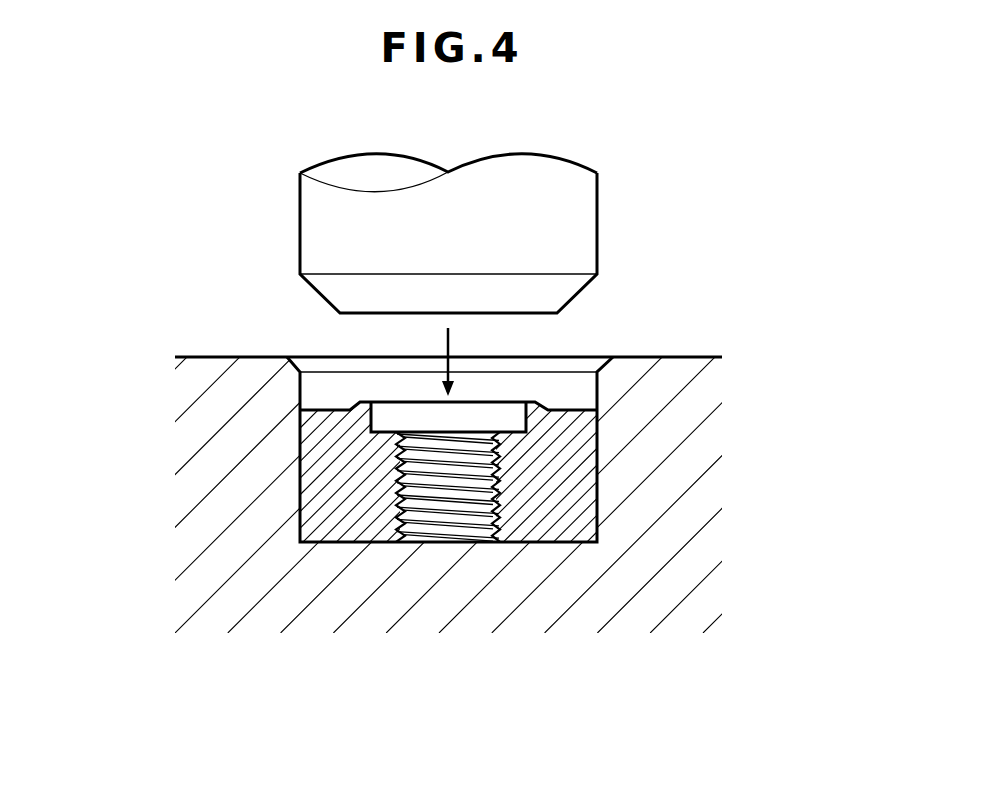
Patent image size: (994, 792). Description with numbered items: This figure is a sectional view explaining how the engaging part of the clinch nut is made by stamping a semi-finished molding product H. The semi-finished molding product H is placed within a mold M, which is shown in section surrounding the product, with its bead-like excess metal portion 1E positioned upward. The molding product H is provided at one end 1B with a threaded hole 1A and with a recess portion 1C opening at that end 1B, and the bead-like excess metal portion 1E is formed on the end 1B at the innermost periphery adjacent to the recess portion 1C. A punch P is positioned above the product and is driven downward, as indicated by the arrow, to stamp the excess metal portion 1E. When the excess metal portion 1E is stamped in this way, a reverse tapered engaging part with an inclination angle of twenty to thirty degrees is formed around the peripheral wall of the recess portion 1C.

The punch P is at (298, 240).
The mold M is at (212, 357).
The semi-finished molding product H is at (599, 487).
The threaded hole 1A is at (447, 518).
The end 1B is at (572, 408).
The recess portion 1C is at (390, 430).
The bead-like excess metal portion 1E is at (532, 400).